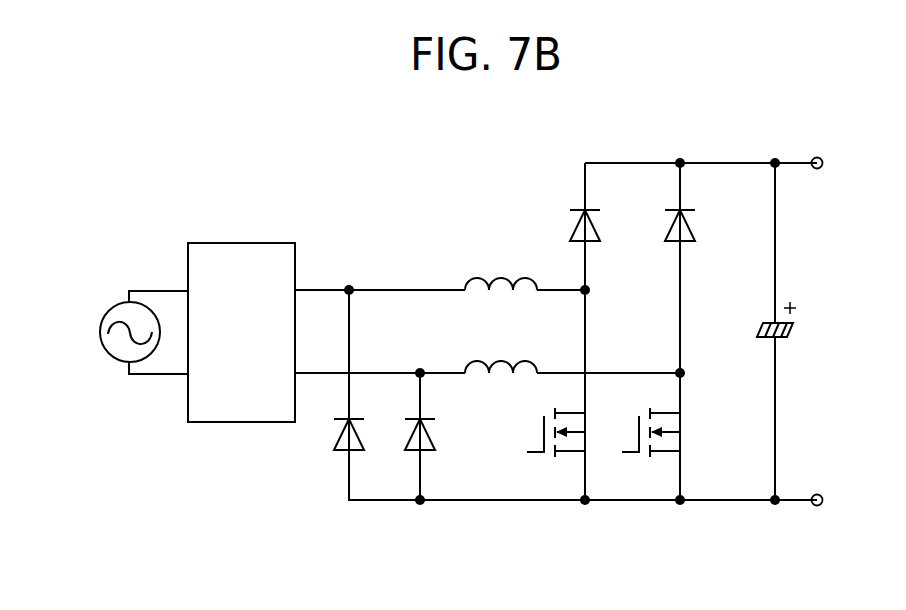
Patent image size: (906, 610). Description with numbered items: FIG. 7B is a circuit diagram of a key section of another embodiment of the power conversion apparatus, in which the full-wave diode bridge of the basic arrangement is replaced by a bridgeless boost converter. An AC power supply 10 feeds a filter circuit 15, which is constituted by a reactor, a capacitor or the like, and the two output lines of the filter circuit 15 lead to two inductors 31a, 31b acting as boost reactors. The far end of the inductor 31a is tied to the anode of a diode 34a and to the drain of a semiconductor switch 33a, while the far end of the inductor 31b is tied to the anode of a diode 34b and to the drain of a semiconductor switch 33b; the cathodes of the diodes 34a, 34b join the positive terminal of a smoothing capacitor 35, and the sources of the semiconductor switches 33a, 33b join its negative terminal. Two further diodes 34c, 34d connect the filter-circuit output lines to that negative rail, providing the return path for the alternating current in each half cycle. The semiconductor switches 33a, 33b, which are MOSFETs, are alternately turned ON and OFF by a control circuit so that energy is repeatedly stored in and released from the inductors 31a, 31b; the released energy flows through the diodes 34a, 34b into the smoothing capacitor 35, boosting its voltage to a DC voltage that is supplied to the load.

The AC power supply 10 is at (112, 311).
The filter circuit 15 is at (243, 253).
The inductor 31a is at (496, 272).
The inductor 31b is at (517, 355).
The semiconductor switch 33a is at (528, 430).
The semiconductor switch 33b is at (685, 425).
The diode 34a is at (568, 218).
The diode 34b is at (695, 222).
The diode 34c is at (328, 438).
The diode 34d is at (408, 458).
The smoothing capacitor 35 is at (805, 328).